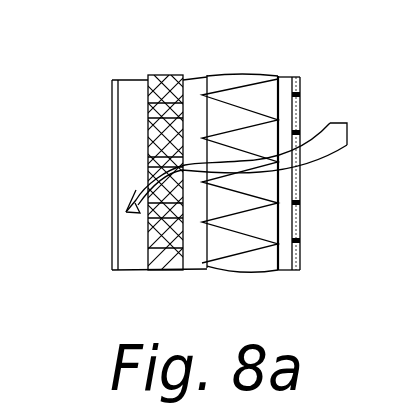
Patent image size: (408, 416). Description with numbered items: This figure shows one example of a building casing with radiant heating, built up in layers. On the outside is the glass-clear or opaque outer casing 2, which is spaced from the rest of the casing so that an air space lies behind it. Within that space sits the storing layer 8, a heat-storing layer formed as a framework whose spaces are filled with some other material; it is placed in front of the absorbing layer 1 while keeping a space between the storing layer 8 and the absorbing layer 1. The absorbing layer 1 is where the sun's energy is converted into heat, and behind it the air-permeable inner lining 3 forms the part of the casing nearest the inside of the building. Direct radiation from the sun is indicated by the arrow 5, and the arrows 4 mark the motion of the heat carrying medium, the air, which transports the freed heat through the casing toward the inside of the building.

The absorbing layer 1 is at (238, 95).
The outer casing 2 is at (112, 160).
The air-permeable inner lining 3 is at (298, 80).
The arrows marking motion of heat carrying medium 4 is at (337, 132).
The arrow indicating direct solar radiation 5 is at (131, 130).
The storing layer 8 is at (165, 74).